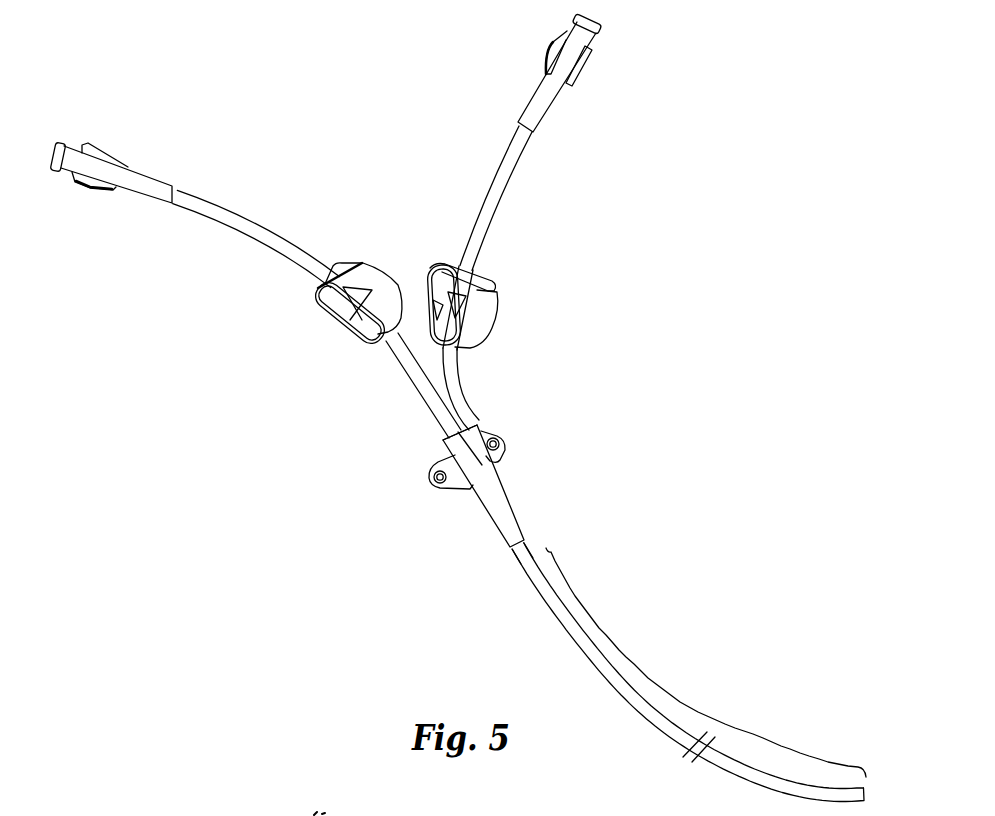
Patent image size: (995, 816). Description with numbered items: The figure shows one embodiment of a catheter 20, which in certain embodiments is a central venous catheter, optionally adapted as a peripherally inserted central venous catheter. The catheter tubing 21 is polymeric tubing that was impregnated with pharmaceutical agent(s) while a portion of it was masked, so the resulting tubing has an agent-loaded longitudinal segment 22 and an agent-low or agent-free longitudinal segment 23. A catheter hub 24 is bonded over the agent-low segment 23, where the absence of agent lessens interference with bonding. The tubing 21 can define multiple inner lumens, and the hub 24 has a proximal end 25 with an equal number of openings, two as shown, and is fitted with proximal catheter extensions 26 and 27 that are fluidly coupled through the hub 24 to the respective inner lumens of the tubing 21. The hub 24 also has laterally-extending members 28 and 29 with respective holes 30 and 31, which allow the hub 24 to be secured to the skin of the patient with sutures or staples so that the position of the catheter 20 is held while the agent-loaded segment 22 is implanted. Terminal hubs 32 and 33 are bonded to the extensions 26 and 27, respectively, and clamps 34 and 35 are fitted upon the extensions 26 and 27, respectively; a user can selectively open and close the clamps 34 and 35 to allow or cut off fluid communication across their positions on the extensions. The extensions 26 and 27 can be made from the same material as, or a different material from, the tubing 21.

The catheter 20 is at (722, 282).
The catheter tubing 21 is at (607, 676).
The agent(s)-loaded longitudinal segment 22 is at (682, 696).
The agent(s)-low or agent(s)-free longitudinal segment 23 is at (544, 548).
The catheter hub 24 is at (483, 512).
The proximal end 25 is at (441, 445).
The proximal catheter extension 26 is at (487, 223).
The proximal catheter extension 27 is at (241, 243).
The laterally-extending member 28 is at (507, 452).
The laterally-extending member 29 is at (440, 491).
The hole 30 is at (501, 431).
The hole 31 is at (426, 470).
The terminal hub 32 is at (586, 62).
The terminal hub 33 is at (137, 171).
The clamp 34 is at (489, 306).
The clamp 35 is at (331, 306).